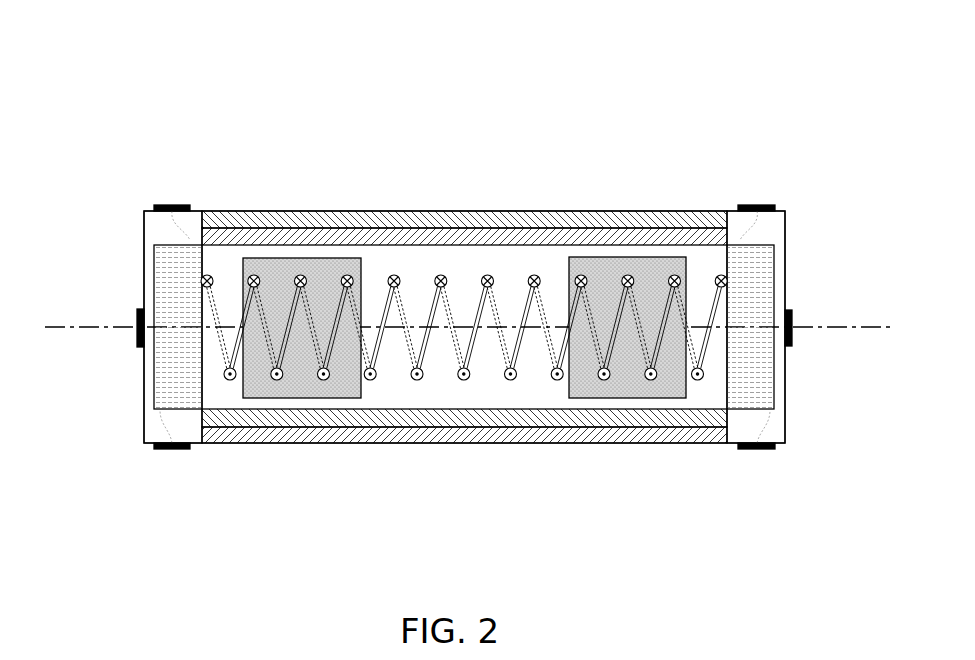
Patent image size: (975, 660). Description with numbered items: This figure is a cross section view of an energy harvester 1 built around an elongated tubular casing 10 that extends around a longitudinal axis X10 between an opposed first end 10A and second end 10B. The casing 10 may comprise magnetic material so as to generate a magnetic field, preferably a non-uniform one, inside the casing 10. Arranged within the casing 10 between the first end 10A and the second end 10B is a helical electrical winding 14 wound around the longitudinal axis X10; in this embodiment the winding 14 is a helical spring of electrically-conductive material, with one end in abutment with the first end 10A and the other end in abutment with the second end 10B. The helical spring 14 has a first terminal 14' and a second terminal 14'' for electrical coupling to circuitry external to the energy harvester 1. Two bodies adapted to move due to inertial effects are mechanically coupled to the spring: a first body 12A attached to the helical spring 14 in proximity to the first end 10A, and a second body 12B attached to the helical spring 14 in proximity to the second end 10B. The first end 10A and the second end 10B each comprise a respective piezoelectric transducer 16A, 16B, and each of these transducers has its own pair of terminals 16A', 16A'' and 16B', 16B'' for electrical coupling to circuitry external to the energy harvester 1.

The energy harvester 1 is at (579, 91).
The elongated tubular casing 10 is at (270, 211).
The first end of the casing 10A is at (153, 228).
The second end of the casing 10B is at (777, 228).
The first body 12A is at (300, 258).
The second body 12B is at (650, 258).
The helical electrical winding 14 is at (464, 271).
The first terminal 14' is at (117, 343).
The second terminal 14'' is at (818, 343).
The piezoelectric transducer 16A is at (132, 327).
The terminal of piezoelectric transducer 16A' is at (157, 165).
The terminal of piezoelectric transducer 16A'' is at (157, 492).
The piezoelectric transducer 16B is at (795, 327).
The terminal of piezoelectric transducer 16B' is at (771, 165).
The terminal of piezoelectric transducer 16B'' is at (776, 492).
The longitudinal axis X10 is at (71, 330).